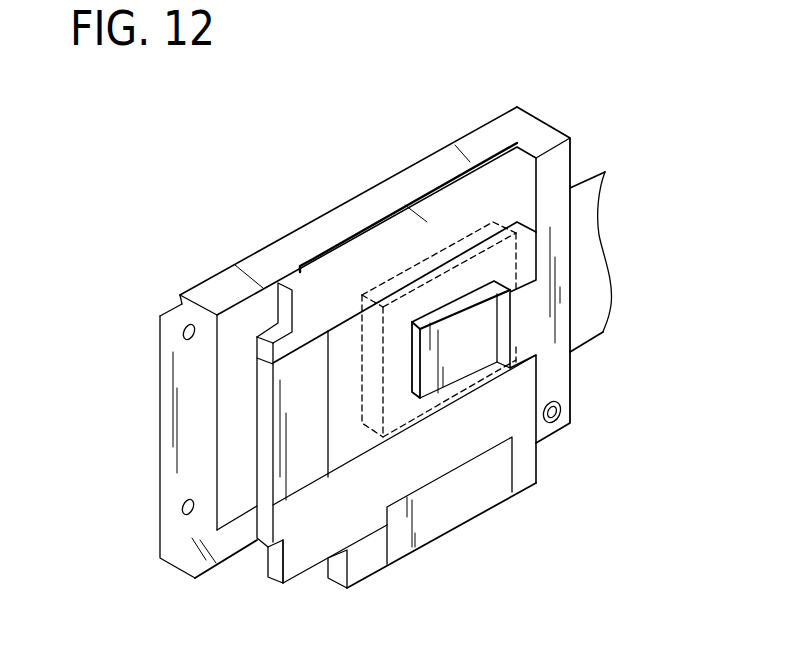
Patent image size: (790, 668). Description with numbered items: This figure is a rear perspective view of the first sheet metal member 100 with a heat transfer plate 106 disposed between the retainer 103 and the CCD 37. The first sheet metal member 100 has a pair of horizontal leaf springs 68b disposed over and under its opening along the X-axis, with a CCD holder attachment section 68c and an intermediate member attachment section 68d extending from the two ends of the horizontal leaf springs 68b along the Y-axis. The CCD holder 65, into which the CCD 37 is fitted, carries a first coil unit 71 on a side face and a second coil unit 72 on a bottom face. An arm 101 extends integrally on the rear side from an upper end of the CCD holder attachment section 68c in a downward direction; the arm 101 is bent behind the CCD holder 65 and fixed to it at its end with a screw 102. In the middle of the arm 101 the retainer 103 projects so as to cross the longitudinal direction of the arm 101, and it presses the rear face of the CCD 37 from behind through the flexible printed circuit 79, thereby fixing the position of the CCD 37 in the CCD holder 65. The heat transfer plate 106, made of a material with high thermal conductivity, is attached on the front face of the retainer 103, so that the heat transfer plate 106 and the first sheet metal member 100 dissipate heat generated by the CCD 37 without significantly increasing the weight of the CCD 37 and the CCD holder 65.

The first sheet metal member 100 is at (542, 113).
The arm 101 is at (563, 172).
The screw 102 is at (552, 424).
The retainer 103 is at (457, 354).
The heat transfer plate 106 is at (478, 284).
The CCD 37 is at (417, 260).
The CCD holder 65 is at (530, 492).
The horizontal leaf springs 68b is at (270, 252).
The CCD holder attachment section 68c is at (503, 120).
The intermediate member attachment section 68d is at (166, 410).
The first coil unit 71 is at (263, 440).
The second coil unit 72 is at (458, 523).
The flexible printed circuit 79 is at (605, 299).